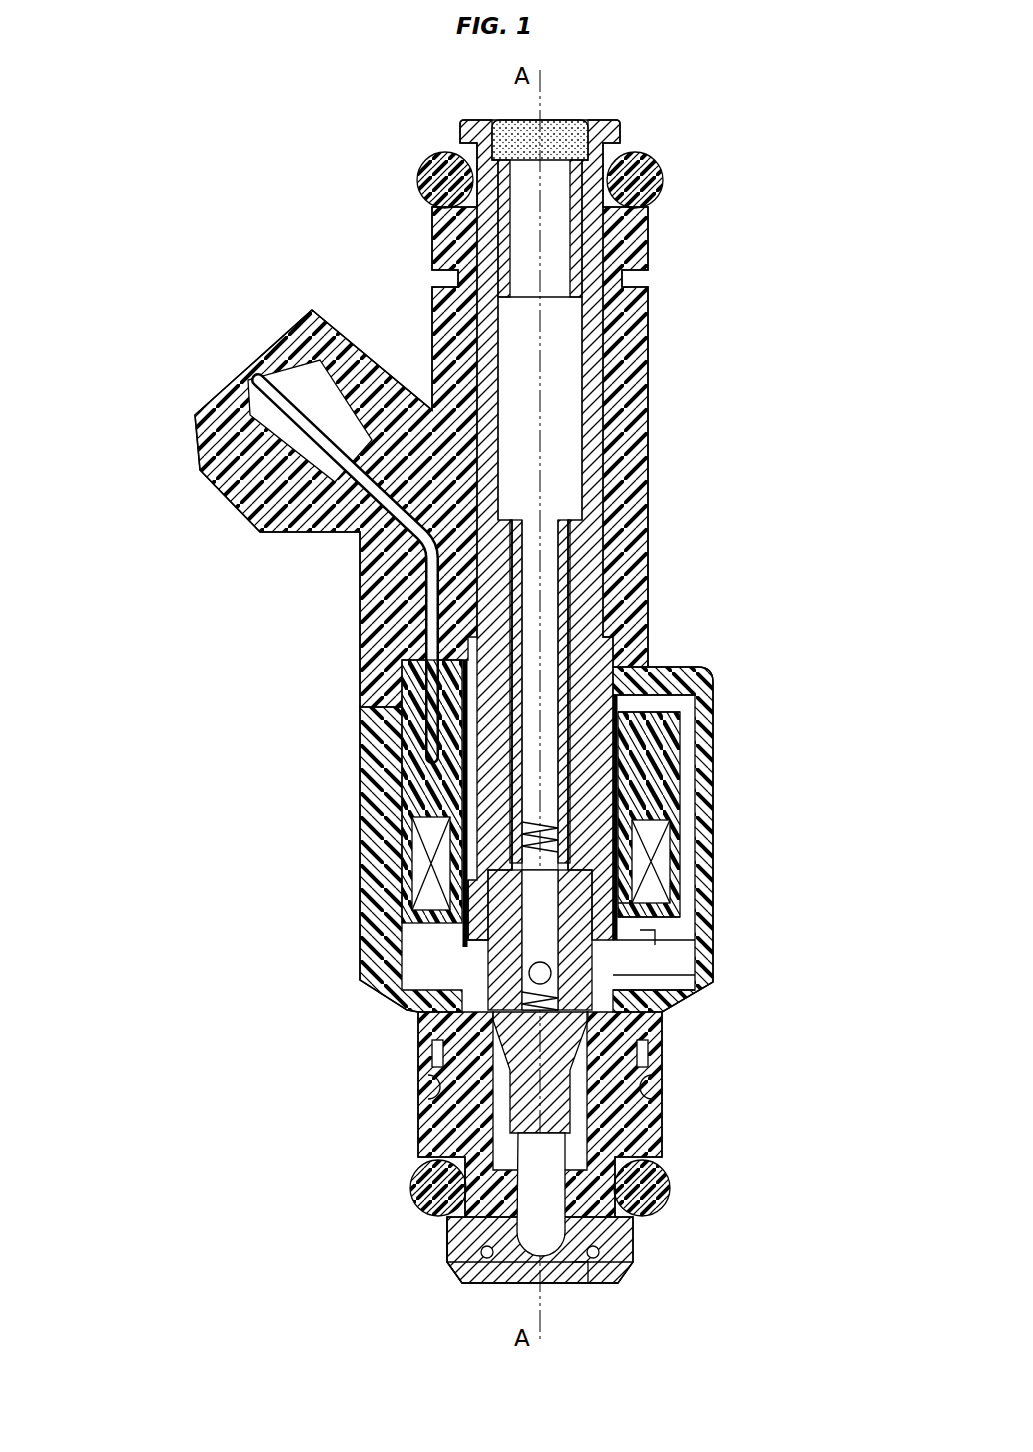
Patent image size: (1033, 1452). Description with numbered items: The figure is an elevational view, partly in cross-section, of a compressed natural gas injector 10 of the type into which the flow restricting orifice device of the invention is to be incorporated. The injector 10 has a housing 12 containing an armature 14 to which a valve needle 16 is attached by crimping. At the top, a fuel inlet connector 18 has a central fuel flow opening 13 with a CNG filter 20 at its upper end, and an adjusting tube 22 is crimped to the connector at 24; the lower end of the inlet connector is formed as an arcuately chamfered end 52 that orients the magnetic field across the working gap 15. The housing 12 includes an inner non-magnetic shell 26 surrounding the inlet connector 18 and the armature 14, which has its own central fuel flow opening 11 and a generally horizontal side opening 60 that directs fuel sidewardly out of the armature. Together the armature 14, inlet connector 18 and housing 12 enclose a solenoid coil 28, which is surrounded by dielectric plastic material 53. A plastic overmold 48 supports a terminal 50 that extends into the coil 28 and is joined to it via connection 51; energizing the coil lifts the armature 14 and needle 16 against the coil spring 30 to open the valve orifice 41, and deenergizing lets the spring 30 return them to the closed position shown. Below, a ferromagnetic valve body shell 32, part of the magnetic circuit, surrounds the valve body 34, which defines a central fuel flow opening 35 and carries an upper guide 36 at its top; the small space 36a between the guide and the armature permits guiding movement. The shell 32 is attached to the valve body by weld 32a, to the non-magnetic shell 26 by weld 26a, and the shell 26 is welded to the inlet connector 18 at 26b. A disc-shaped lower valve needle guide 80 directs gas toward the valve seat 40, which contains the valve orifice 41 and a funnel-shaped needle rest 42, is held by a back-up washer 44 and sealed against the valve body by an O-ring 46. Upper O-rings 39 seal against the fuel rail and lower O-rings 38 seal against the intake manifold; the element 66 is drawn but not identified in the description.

The CNG injector 10 is at (696, 258).
The central fuel flow opening 11 is at (569, 928).
The housing 12 is at (700, 669).
The central fuel flow opening 13 is at (566, 350).
The armature 14 is at (626, 975).
The working gap 15 is at (462, 905).
The valve needle 16 is at (576, 1172).
The fuel inlet connector 18 is at (598, 397).
The CNG filter 20 is at (556, 127).
The adjusting tube 22 is at (572, 560).
The crimp connection 24 is at (586, 598).
The inner non-magnetic shell 26 is at (612, 925).
The weld 26a is at (626, 895).
The weld 26b is at (632, 730).
The solenoid coil 28 is at (656, 825).
The coil spring 30 is at (500, 826).
The valve body shell 32 is at (412, 962).
The weld 32a is at (656, 1020).
The valve body 34 is at (641, 1042).
The central fuel flow opening 35 is at (601, 1078).
The upper guide 36 is at (416, 1013).
The space 36a is at (433, 1041).
The lower O-rings 38 is at (671, 1193).
The upper O-rings 39 is at (663, 182).
The valve seat 40 is at (596, 1237).
The valve orifice 41 is at (581, 1263).
The needle rest 42 is at (484, 1244).
The back-up washer 44 is at (491, 1283).
The O-ring 46 is at (594, 1254).
The overmold 48 is at (226, 497).
The terminal 50 is at (358, 540).
The connection 51 is at (430, 812).
The arcuately chamfered end 52 is at (466, 850).
The dielectric plastic material 53 is at (412, 735).
The side opening 60 is at (656, 942).
The retaining ring 66 is at (646, 1003).
The lower valve needle guide 80 is at (448, 1222).